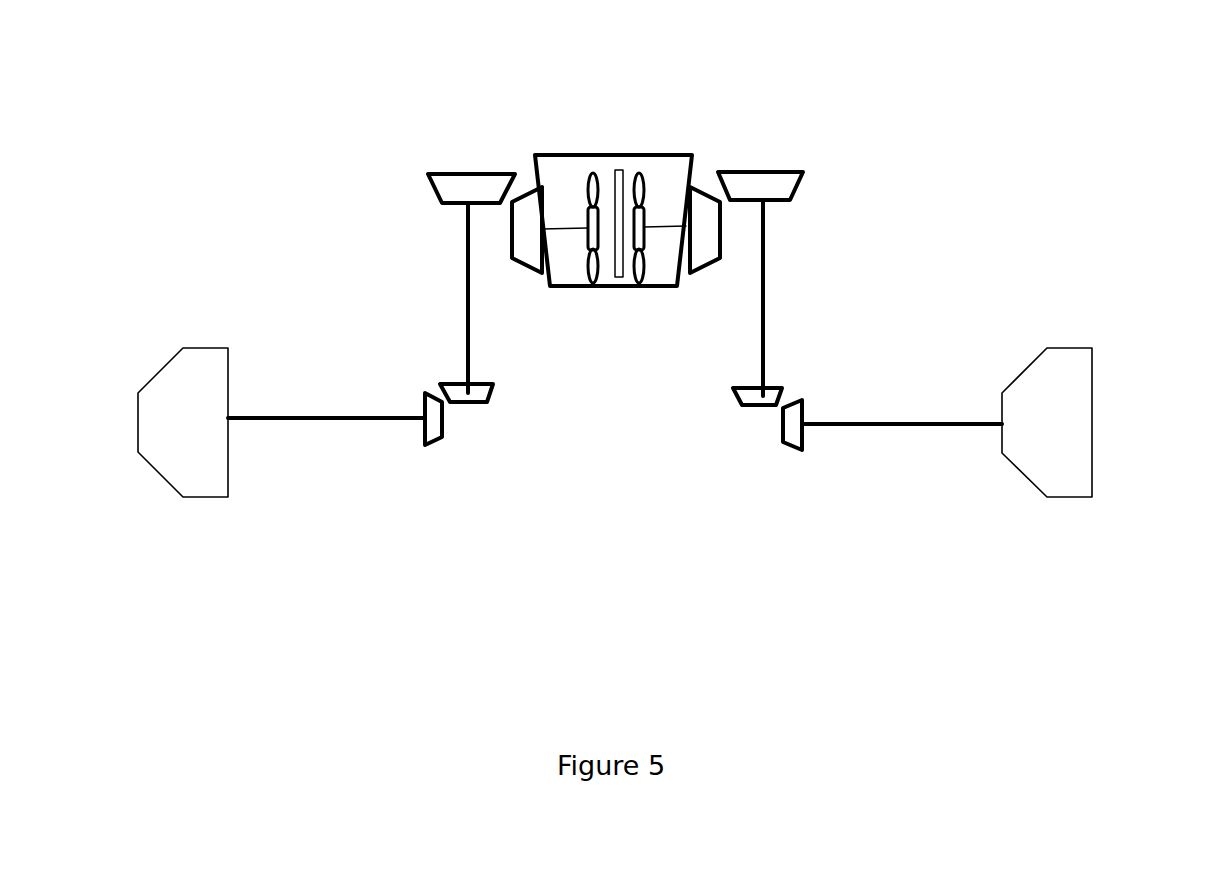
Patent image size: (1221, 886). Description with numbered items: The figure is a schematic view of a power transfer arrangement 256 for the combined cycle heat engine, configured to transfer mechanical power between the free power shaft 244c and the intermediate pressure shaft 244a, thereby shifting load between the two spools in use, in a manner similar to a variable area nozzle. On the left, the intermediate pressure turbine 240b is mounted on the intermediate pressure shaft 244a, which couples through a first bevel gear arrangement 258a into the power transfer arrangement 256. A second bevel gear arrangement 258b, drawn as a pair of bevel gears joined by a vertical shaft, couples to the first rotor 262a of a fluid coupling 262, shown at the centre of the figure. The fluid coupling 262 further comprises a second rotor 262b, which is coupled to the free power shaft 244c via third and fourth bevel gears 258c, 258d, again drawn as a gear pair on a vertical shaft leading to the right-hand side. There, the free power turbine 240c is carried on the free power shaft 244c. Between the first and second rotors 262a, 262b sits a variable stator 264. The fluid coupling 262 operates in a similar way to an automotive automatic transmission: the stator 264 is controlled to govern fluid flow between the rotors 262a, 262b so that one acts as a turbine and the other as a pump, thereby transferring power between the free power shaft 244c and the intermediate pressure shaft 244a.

The power transfer arrangement 256 is at (433, 122).
The first bevel gear arrangement 258a is at (433, 383).
The second bevel gear arrangement 258b is at (525, 172).
The third bevel gear 258c is at (718, 167).
The fourth bevel gear 258d is at (800, 398).
The fluid coupling 262 is at (613, 153).
The first rotor 262a is at (590, 273).
The second rotor 262b is at (645, 273).
The variable stator 264 is at (620, 279).
The intermediate pressure turbine 240b is at (185, 348).
The free power turbine 240c is at (1077, 348).
The intermediate pressure shaft 244a is at (325, 423).
The free power shaft 244c is at (882, 422).